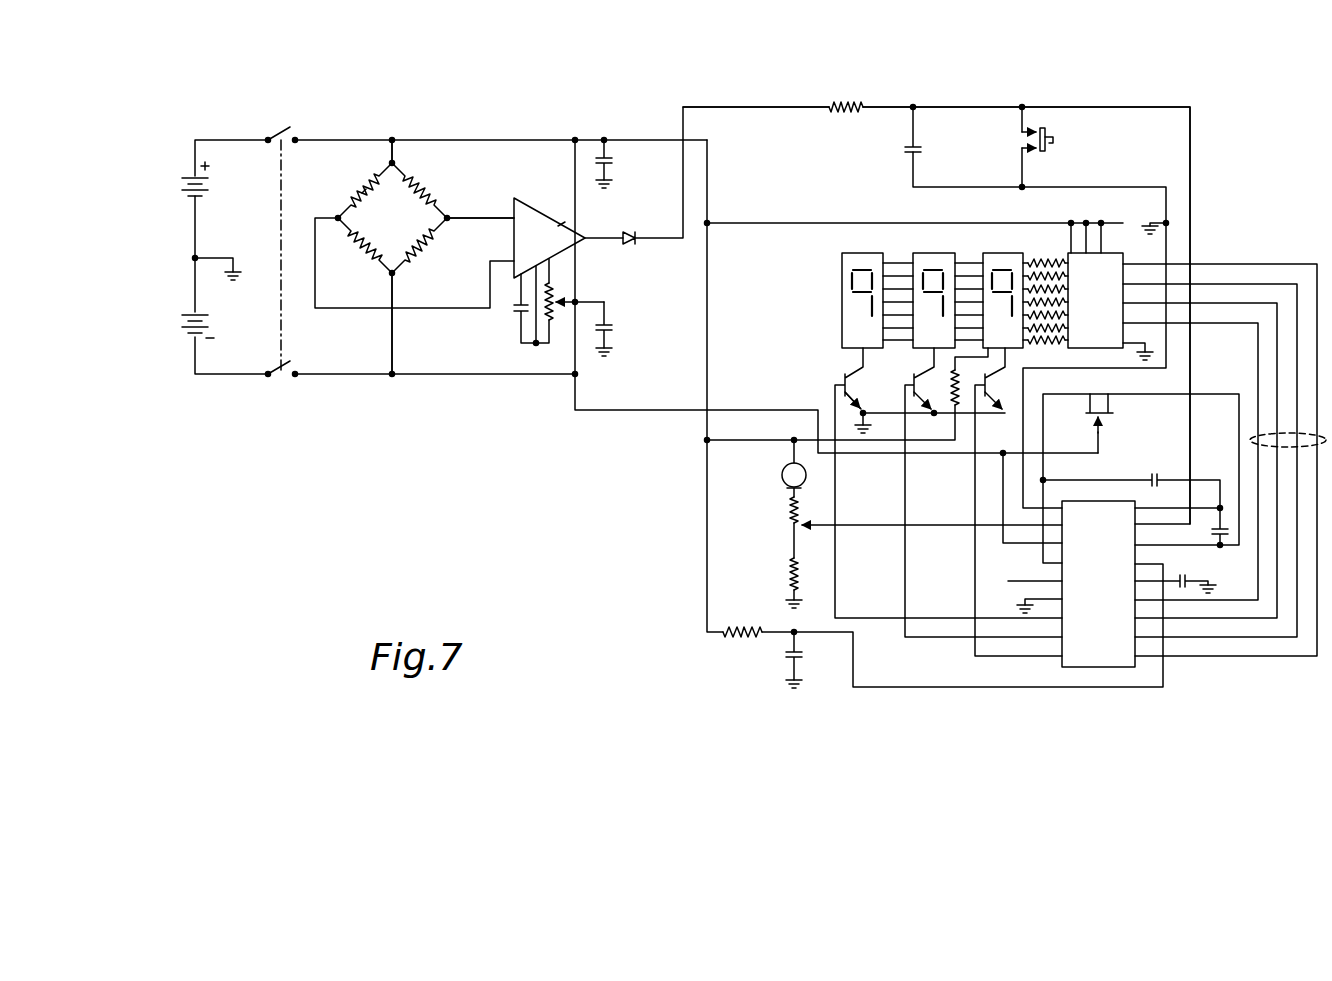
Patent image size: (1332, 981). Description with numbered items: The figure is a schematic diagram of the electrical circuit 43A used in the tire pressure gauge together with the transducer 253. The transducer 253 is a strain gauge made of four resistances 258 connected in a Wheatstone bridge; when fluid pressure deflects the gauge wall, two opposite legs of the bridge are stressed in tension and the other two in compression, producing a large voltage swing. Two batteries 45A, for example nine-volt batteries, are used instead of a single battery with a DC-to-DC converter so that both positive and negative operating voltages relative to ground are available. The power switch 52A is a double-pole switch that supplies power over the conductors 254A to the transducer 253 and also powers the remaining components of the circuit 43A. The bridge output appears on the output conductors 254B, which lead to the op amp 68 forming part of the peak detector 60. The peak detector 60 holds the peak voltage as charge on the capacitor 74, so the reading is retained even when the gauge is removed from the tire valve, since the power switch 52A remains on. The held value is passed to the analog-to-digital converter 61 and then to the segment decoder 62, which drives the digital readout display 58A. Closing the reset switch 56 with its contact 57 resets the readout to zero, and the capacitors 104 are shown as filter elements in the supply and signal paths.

The circuit 43A is at (1242, 84).
The batteries 45A is at (190, 204).
The power switch 52A is at (287, 130).
The transducer 253 is at (438, 204).
The conductors 254A is at (393, 150).
The output conductors 254B is at (449, 222).
The resistances 258 is at (364, 195).
The peak detector 60 is at (538, 195).
The op amp 68 is at (561, 227).
The filter capacitor 104 is at (608, 160).
The capacitor 74 is at (915, 148).
The reset switch 56 is at (1027, 136).
The switch contact 57 is at (1053, 147).
The digital display 58A is at (925, 252).
The segment decoder 62 is at (1119, 252).
The analog-to-digital converter 61 is at (1100, 500).